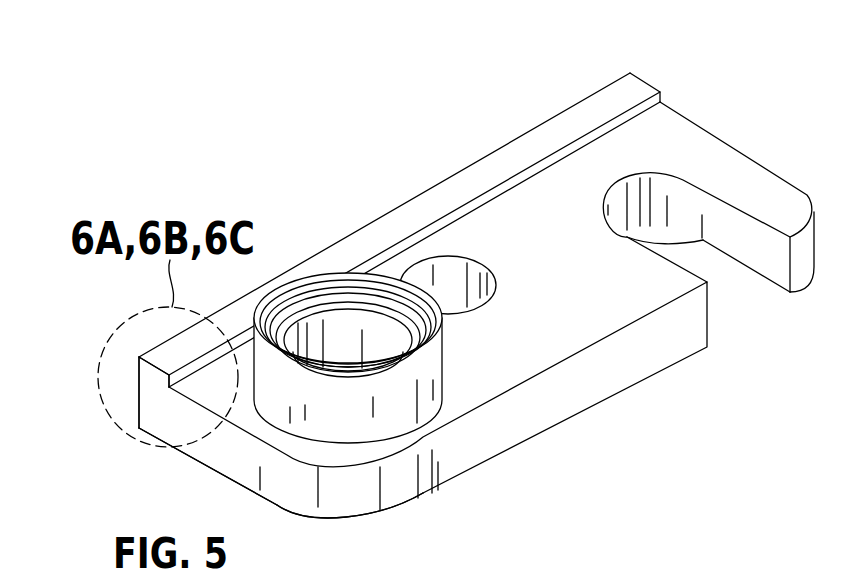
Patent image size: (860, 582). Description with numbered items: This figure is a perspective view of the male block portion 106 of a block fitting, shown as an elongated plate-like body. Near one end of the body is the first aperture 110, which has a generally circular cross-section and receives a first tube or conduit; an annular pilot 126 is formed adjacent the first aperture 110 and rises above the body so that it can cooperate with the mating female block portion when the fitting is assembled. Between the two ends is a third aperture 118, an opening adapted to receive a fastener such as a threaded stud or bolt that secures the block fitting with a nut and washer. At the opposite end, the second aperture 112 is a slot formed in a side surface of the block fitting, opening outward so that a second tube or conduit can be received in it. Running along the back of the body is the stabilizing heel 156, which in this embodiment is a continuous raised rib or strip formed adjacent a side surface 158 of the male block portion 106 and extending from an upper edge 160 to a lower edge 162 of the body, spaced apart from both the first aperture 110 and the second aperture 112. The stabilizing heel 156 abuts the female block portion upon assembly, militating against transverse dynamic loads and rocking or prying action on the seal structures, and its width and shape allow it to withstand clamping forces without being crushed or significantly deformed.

The male block portion 106 is at (695, 68).
The first aperture 110 is at (345, 370).
The second aperture 112 is at (657, 173).
The third aperture 118 is at (475, 263).
The annular pilot 126 is at (433, 388).
The stabilizing heel 156 is at (650, 72).
The side surface 158 is at (115, 392).
The upper edge 160 is at (211, 472).
The lower edge 162 is at (769, 142).